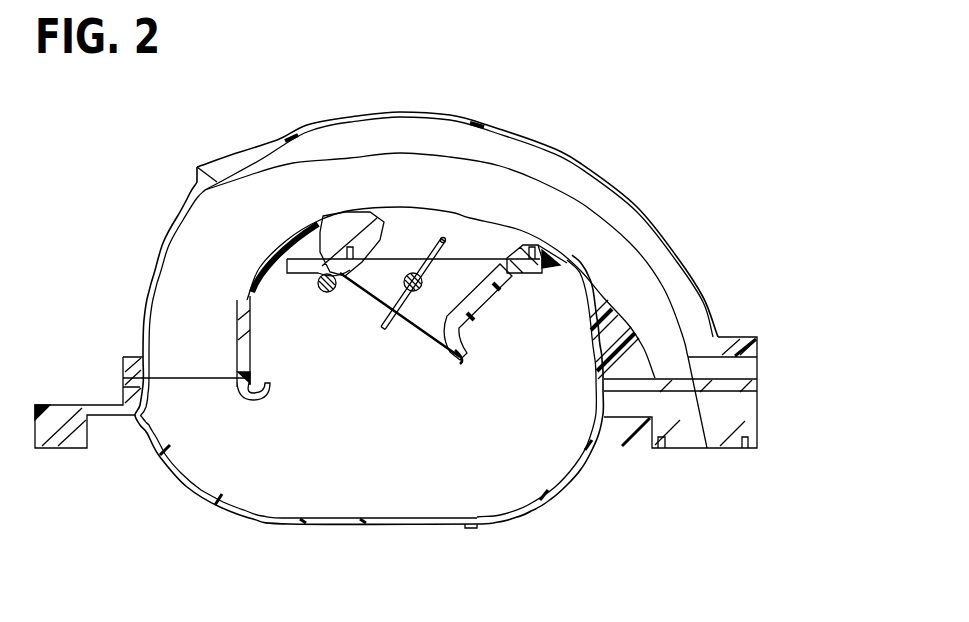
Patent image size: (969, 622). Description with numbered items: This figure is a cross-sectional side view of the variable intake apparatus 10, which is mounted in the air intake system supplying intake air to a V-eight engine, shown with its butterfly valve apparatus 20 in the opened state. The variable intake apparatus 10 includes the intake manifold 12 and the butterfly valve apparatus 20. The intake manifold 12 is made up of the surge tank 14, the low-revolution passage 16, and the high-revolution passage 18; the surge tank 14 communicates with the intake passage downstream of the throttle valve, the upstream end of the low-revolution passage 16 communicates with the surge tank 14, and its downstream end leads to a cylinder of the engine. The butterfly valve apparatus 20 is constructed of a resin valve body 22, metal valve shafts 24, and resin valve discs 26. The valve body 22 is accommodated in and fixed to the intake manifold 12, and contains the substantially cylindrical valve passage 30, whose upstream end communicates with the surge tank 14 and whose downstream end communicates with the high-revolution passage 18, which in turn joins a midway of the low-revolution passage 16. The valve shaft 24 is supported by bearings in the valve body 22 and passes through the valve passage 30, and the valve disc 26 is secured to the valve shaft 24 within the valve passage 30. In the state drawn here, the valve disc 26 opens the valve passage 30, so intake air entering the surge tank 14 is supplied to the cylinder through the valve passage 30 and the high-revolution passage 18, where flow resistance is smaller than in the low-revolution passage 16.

The variable intake apparatus 10 is at (873, 213).
The intake manifold 12 is at (757, 363).
The surge tank 14 is at (418, 478).
The low-revolution passage 16 is at (297, 210).
The high-revolution passage 18 is at (478, 218).
The butterfly valve apparatus 20 is at (573, 256).
The valve body 22 is at (493, 290).
The valve shaft 24 is at (323, 293).
The valve disc 26 is at (393, 300).
The valve passage 30 is at (440, 330).